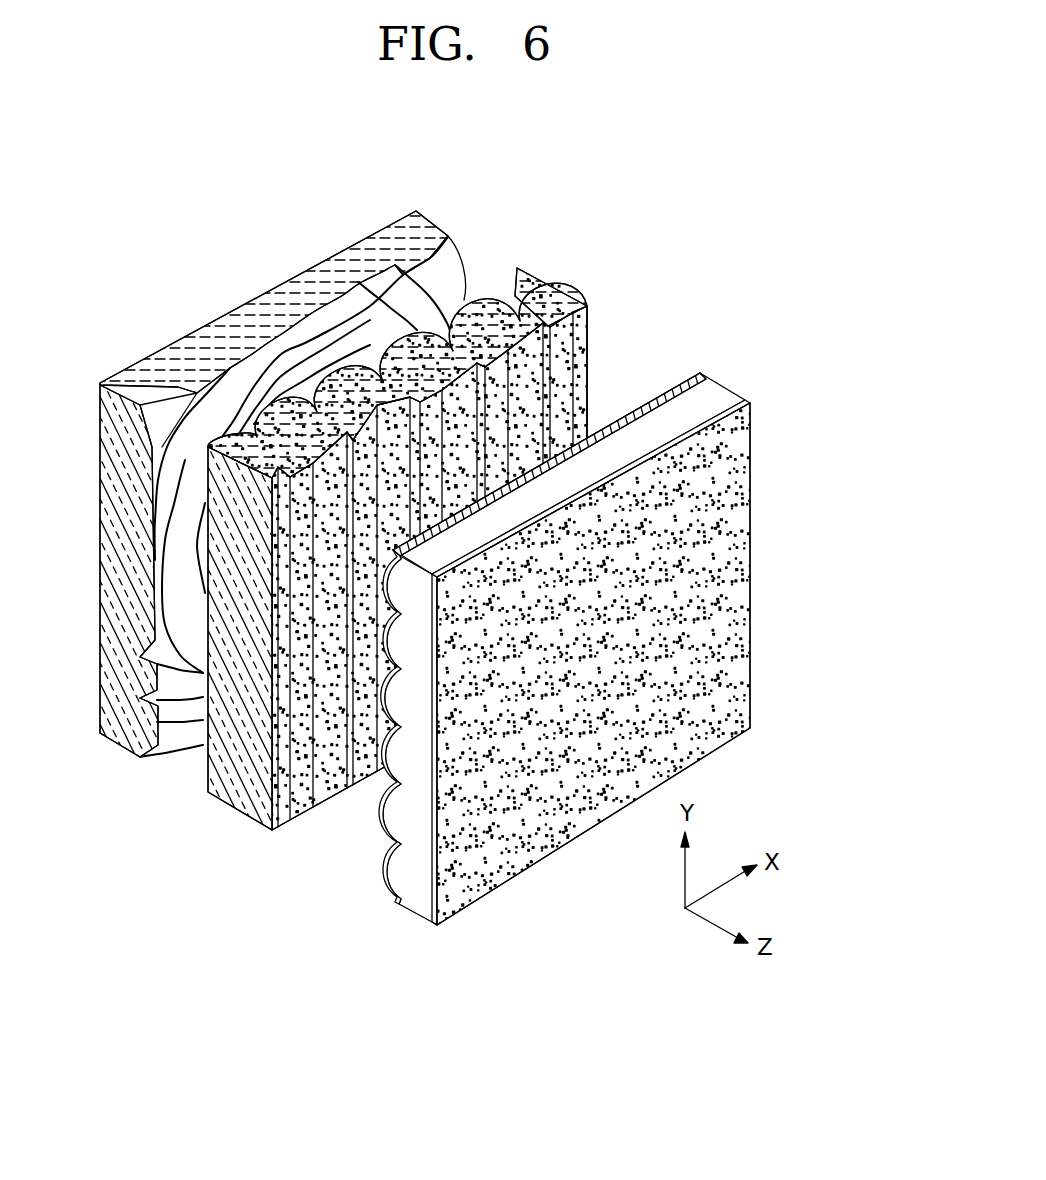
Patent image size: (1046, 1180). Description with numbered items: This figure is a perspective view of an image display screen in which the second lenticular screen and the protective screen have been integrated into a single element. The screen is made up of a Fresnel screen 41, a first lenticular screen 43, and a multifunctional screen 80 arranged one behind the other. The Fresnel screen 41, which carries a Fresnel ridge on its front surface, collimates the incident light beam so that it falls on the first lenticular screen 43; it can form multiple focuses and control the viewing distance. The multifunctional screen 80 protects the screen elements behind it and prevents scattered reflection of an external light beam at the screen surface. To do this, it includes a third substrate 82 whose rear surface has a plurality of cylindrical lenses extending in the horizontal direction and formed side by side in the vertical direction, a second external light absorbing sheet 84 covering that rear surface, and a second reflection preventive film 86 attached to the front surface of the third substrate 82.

The Fresnel screen 41 is at (428, 232).
The first lenticular screen 43 is at (552, 295).
The multifunctional screen 80 is at (752, 373).
The third substrate 82 is at (412, 898).
The second external light absorbing sheet 84 is at (380, 872).
The second reflection preventive film 86 is at (730, 500).